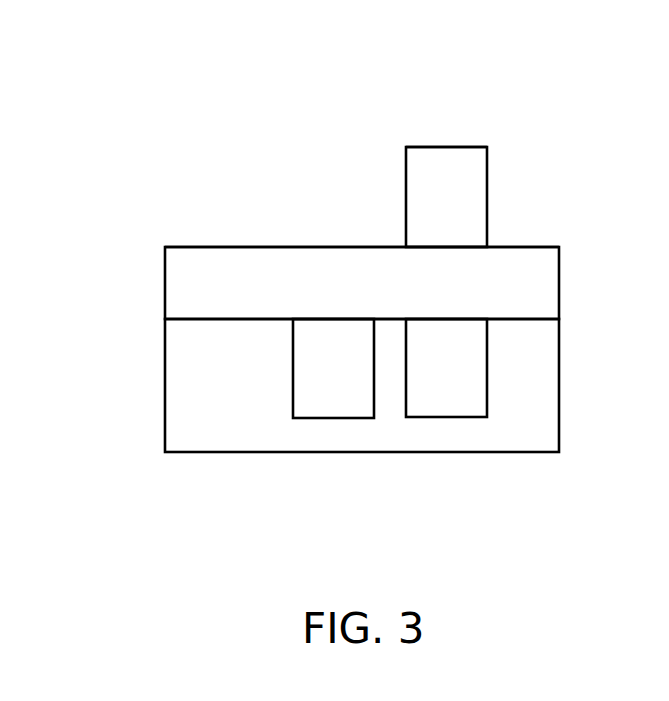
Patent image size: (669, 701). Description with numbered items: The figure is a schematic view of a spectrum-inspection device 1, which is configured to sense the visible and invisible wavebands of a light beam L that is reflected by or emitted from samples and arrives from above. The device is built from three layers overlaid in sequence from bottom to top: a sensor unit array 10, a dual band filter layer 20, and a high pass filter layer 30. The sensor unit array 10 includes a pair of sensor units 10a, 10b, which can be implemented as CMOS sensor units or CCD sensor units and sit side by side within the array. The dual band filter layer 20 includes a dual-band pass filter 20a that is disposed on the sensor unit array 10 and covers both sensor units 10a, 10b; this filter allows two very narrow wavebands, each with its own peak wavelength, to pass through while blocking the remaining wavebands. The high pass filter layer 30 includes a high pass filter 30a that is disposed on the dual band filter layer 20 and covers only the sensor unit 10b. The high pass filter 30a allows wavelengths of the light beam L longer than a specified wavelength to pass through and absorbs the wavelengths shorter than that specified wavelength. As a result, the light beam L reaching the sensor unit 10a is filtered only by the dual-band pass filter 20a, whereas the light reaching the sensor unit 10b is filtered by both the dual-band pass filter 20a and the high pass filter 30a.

The spectrum-inspection device 1 is at (367, 264).
The sensor unit array 10 is at (413, 385).
The sensor unit 10a is at (356, 383).
The sensor unit 10b is at (422, 383).
The dual band filter layer 20 is at (368, 283).
The dual-band pass filter 20a is at (205, 284).
The high pass filter layer 30 is at (533, 161).
The high pass filter 30a is at (445, 188).
The light beam L is at (362, 96).